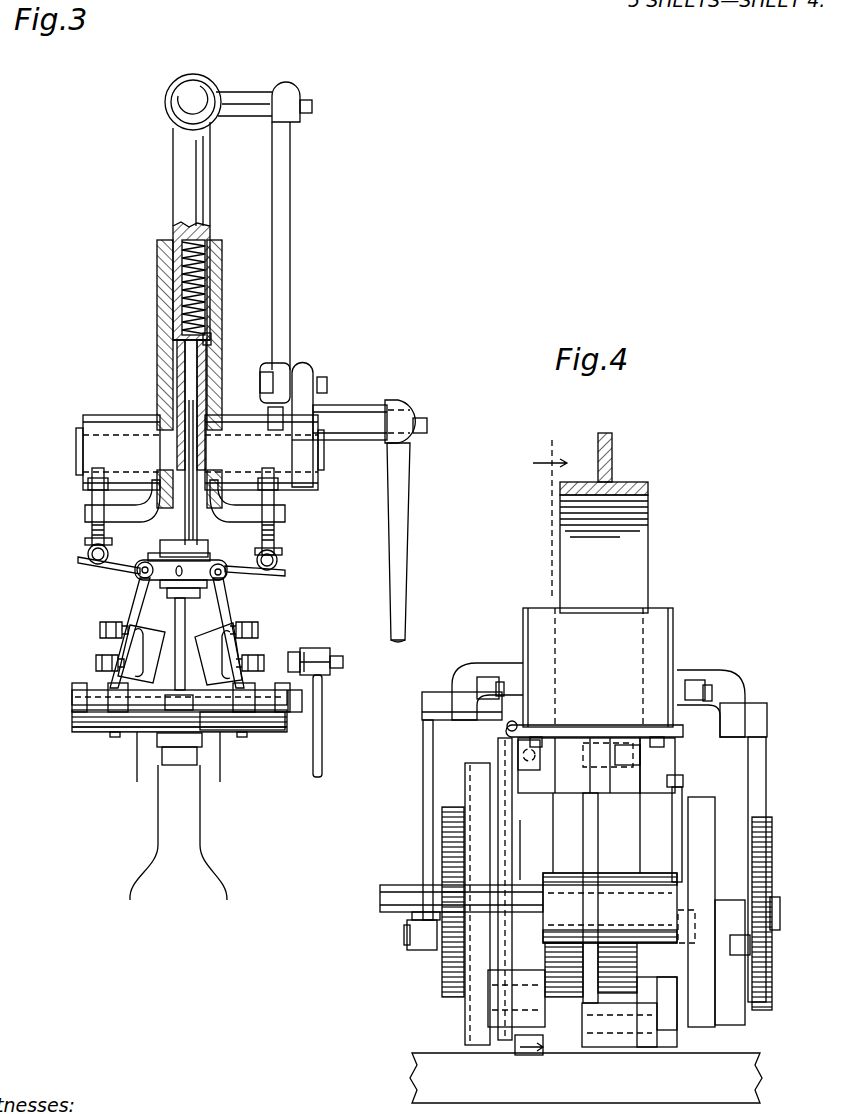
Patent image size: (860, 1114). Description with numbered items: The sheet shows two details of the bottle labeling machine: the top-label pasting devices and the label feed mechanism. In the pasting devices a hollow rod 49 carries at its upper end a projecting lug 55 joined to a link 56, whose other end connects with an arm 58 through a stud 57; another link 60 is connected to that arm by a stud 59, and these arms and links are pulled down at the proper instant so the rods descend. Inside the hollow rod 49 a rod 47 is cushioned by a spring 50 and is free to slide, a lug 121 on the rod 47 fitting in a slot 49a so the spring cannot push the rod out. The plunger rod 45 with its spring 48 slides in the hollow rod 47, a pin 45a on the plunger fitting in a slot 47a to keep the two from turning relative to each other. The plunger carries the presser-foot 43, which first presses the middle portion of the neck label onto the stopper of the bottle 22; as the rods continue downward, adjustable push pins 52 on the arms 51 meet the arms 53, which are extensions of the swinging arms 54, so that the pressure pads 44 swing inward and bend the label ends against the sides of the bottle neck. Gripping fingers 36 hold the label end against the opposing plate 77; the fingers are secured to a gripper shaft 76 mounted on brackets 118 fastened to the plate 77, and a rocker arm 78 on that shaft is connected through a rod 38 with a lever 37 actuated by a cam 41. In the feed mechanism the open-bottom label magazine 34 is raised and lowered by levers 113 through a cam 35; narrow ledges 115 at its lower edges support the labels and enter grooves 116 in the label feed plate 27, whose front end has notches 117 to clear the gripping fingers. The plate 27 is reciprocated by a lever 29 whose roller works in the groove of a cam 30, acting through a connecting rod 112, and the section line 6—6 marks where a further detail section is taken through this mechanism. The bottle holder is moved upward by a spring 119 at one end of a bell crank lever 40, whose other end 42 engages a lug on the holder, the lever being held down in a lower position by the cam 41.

In FIG. 3, the projecting lug 55 is at (245, 94).
In FIG. 3, the hollow rod 49 is at (175, 189).
In FIG. 3, the link 56 is at (291, 186).
In FIG. 3, the spring 50 is at (157, 268).
In FIG. 3, the slot 49a is at (222, 338).
In FIG. 3, the lug 121 is at (234, 338).
In FIG. 3, the hollow rod 47 is at (157, 347).
In FIG. 3, the spring 48 is at (157, 383).
In FIG. 3, the arms 51 is at (85, 510).
In FIG. 3, the adjustable push pins 52 is at (88, 552).
In FIG. 3, the arms 53 is at (80, 565).
In FIG. 3, the slot 47a is at (172, 510).
In FIG. 3, the pin 45a is at (175, 568).
In FIG. 3, the plunger rod 45 is at (157, 607).
In FIG. 3, the pressure pads 44 is at (180, 654).
In FIG. 3, the swinging arms 54 is at (98, 652).
In FIG. 3, the brackets 118 is at (70, 697).
In FIG. 3, the gripping fingers 36 is at (117, 712).
In FIG. 3, the gripper shaft 76 is at (72, 727).
In FIG. 3, the presser-foot 43 is at (157, 718).
In FIG. 3, the gripper plate 77 is at (227, 735).
In FIG. 3, the bottle 22 is at (178, 832).
In FIG. 3, the rocker arm 78 is at (308, 647).
In FIG. 3, the rod 38 is at (330, 677).
In FIG. 3, the lever 37 is at (323, 753).
In FIG. 3, the stud 57 is at (263, 373).
In FIG. 3, the arm 58 is at (310, 365).
In FIG. 3, the stud 59 is at (355, 410).
In FIG. 3, the link 60 is at (405, 513).
In FIG. 4, the section line 6— 6 is at (541, 748).
In FIG. 4, the label magazine 34 is at (653, 613).
In FIG. 4, the levers 113 is at (490, 700).
In FIG. 4, the ledges 115 is at (660, 727).
In FIG. 4, the grooves 116 is at (510, 728).
In FIG. 4, the notches 117 is at (537, 730).
In FIG. 4, the label feed plate 27 is at (718, 700).
In FIG. 4, the lever 29 is at (513, 802).
In FIG. 4, the connecting rod 112 is at (537, 767).
In FIG. 4, the spring 119 is at (663, 828).
In FIG. 4, the cam 41 is at (693, 840).
In FIG. 4, the cam 30 is at (458, 1020).
In FIG. 4, the cam 35 is at (440, 985).
In FIG. 4, the bell crank lever 40 is at (673, 982).
In FIG. 4, the end of bell crank lever 42 is at (588, 1047).